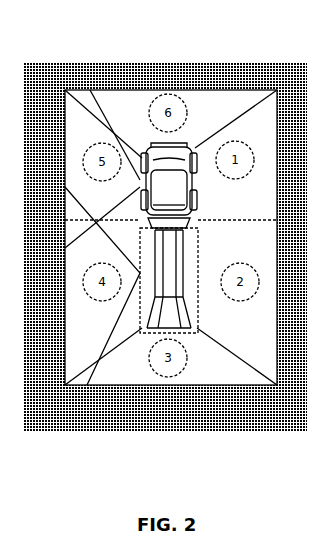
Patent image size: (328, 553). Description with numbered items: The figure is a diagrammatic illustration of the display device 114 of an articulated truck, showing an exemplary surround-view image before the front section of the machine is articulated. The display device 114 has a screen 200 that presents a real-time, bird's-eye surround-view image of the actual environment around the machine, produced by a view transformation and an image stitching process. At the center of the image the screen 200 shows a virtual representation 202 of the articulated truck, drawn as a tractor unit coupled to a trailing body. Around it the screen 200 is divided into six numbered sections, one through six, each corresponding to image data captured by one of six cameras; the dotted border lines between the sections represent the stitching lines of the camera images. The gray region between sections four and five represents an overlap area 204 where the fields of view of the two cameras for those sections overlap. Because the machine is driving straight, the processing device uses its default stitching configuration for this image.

The display device 114 is at (46, 73).
The screen 200 is at (188, 62).
The virtual representation 202 is at (142, 183).
The overlap area 204 is at (66, 213).